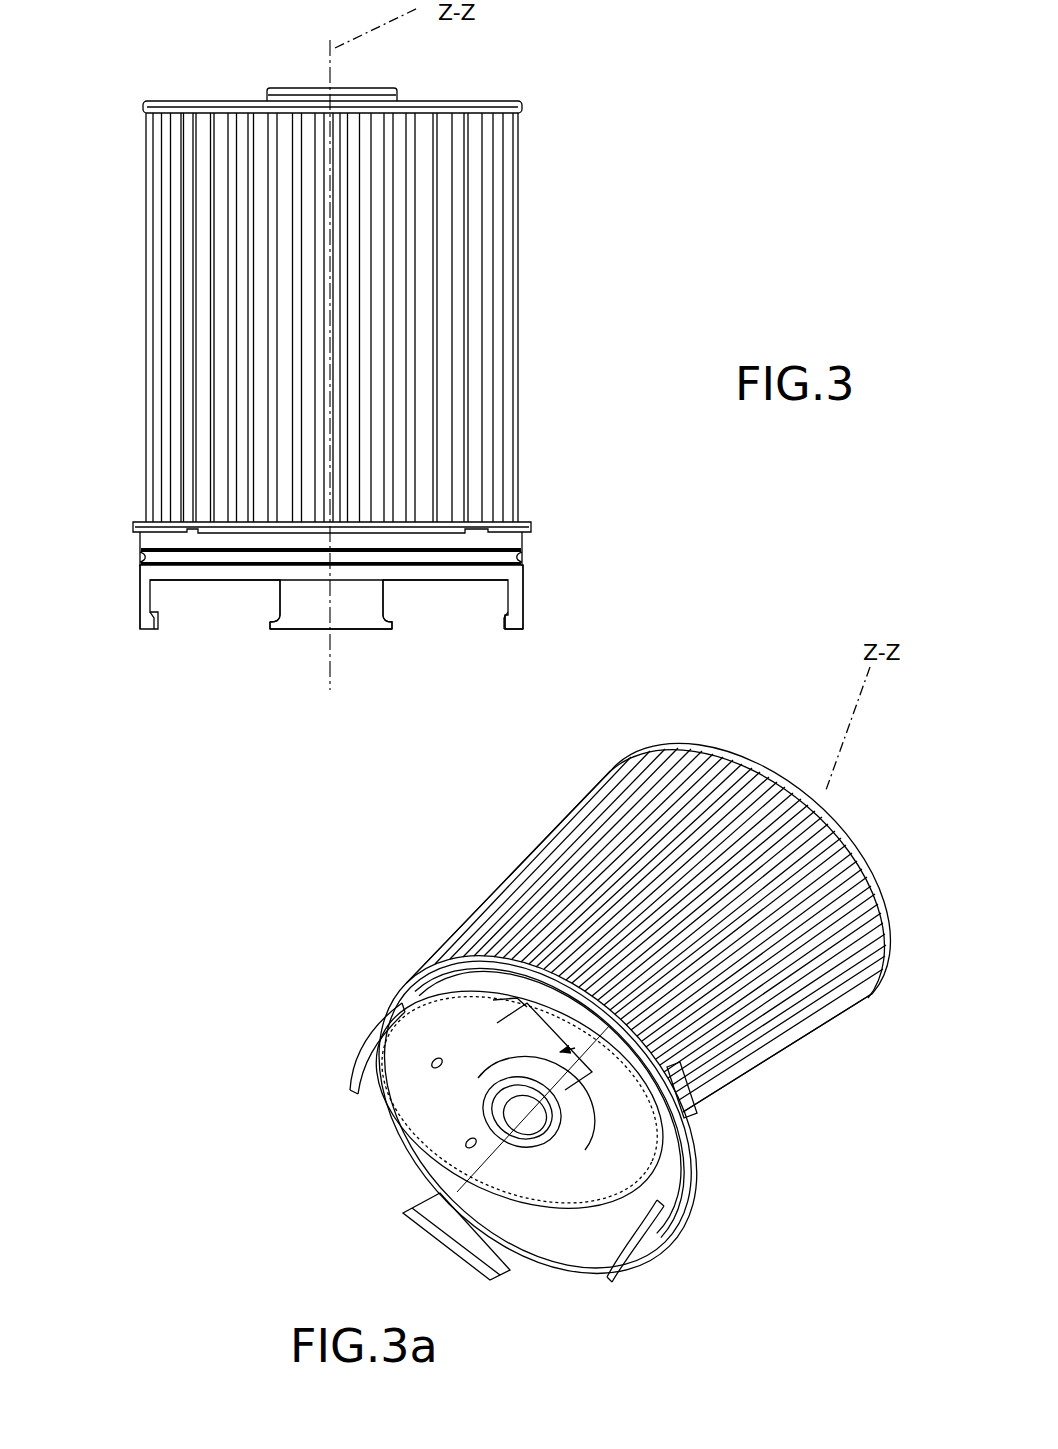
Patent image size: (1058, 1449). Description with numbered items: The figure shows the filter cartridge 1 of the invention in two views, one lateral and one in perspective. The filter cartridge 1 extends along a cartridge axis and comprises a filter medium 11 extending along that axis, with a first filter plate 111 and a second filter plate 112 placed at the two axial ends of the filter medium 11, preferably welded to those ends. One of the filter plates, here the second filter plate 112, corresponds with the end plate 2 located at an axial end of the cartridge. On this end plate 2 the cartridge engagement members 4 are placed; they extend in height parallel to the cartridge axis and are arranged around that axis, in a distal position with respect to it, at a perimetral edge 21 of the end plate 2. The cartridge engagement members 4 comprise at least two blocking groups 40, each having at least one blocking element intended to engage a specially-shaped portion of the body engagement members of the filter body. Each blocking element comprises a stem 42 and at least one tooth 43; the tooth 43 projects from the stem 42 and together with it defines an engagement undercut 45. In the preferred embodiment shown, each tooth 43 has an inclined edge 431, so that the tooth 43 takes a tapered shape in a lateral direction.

In FIG. 3, the filter cartridge 1 is at (741, 172).
In FIG. 3A, the filter cartridge 1 is at (247, 958).
In FIG. 3, the filter medium 11 is at (492, 255).
In FIG. 3, the first filter plate 111 is at (194, 102).
In FIG. 3, the end plate 2 is at (413, 518).
In FIG. 3A, the end plate 2 is at (547, 1200).
In FIG. 3, the second filter plate 112 is at (512, 525).
In FIG. 3A, the perimetral edge 21 is at (480, 957).
In FIG. 3, the cartridge engagement members 4 is at (104, 602).
In FIG. 3A, the cartridge engagement members 4 is at (741, 1265).
In FIG. 3, the blocking group 40 is at (300, 662).
In FIG. 3A, the blocking group 40 is at (349, 1068).
In FIG. 3, the stem 42 is at (522, 600).
In FIG. 3, the tooth 43 is at (392, 622).
In FIG. 3, the inclined edge 431 is at (268, 614).
In FIG. 3, the engagement undercut 45 is at (388, 596).